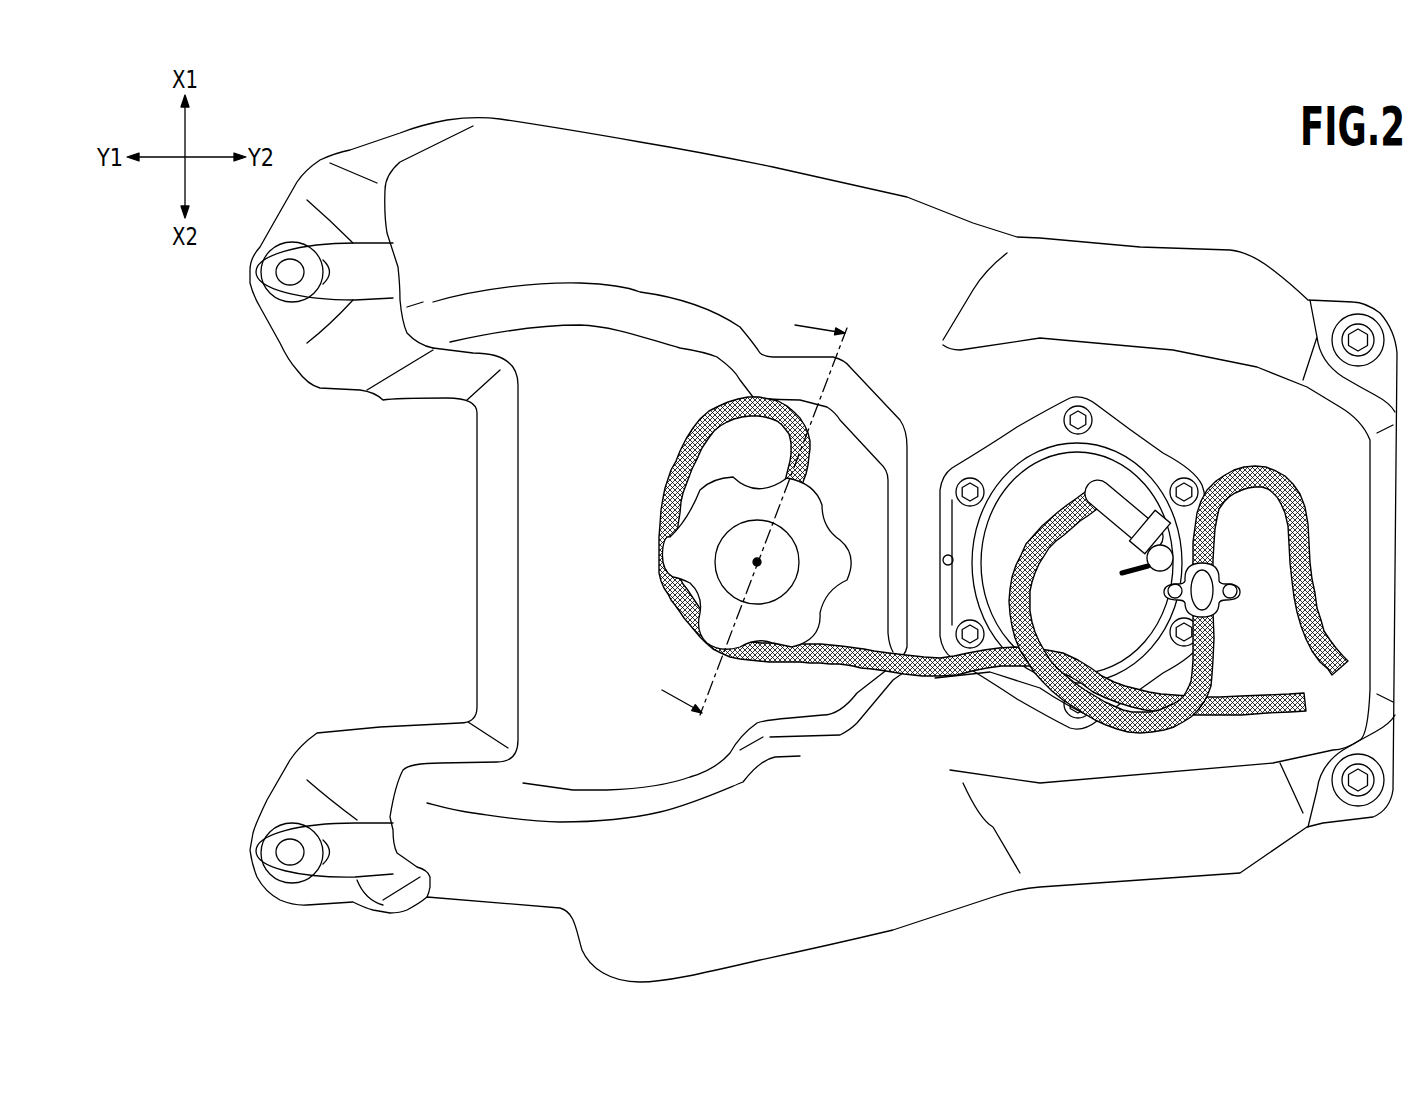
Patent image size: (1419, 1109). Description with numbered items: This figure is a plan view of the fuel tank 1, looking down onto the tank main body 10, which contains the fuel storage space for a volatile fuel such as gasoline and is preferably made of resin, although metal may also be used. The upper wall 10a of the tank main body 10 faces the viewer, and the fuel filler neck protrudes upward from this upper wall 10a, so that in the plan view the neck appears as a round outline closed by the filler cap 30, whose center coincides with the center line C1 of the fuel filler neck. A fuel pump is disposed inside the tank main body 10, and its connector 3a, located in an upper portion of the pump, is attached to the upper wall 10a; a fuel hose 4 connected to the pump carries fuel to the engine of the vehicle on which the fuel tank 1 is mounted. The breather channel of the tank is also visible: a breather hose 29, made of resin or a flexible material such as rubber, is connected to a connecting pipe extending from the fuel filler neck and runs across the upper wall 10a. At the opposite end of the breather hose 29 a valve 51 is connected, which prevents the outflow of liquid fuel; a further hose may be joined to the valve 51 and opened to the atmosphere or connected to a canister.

The fuel tank 1 is at (1013, 190).
The tank main body 10 is at (620, 145).
The upper wall 10a is at (540, 540).
The connector 3a is at (1120, 467).
The fuel hose 4 is at (1057, 527).
The breather hose 29 is at (710, 413).
The filler cap 30 is at (707, 610).
The valve 51 is at (1220, 577).
The center line C1 is at (760, 562).